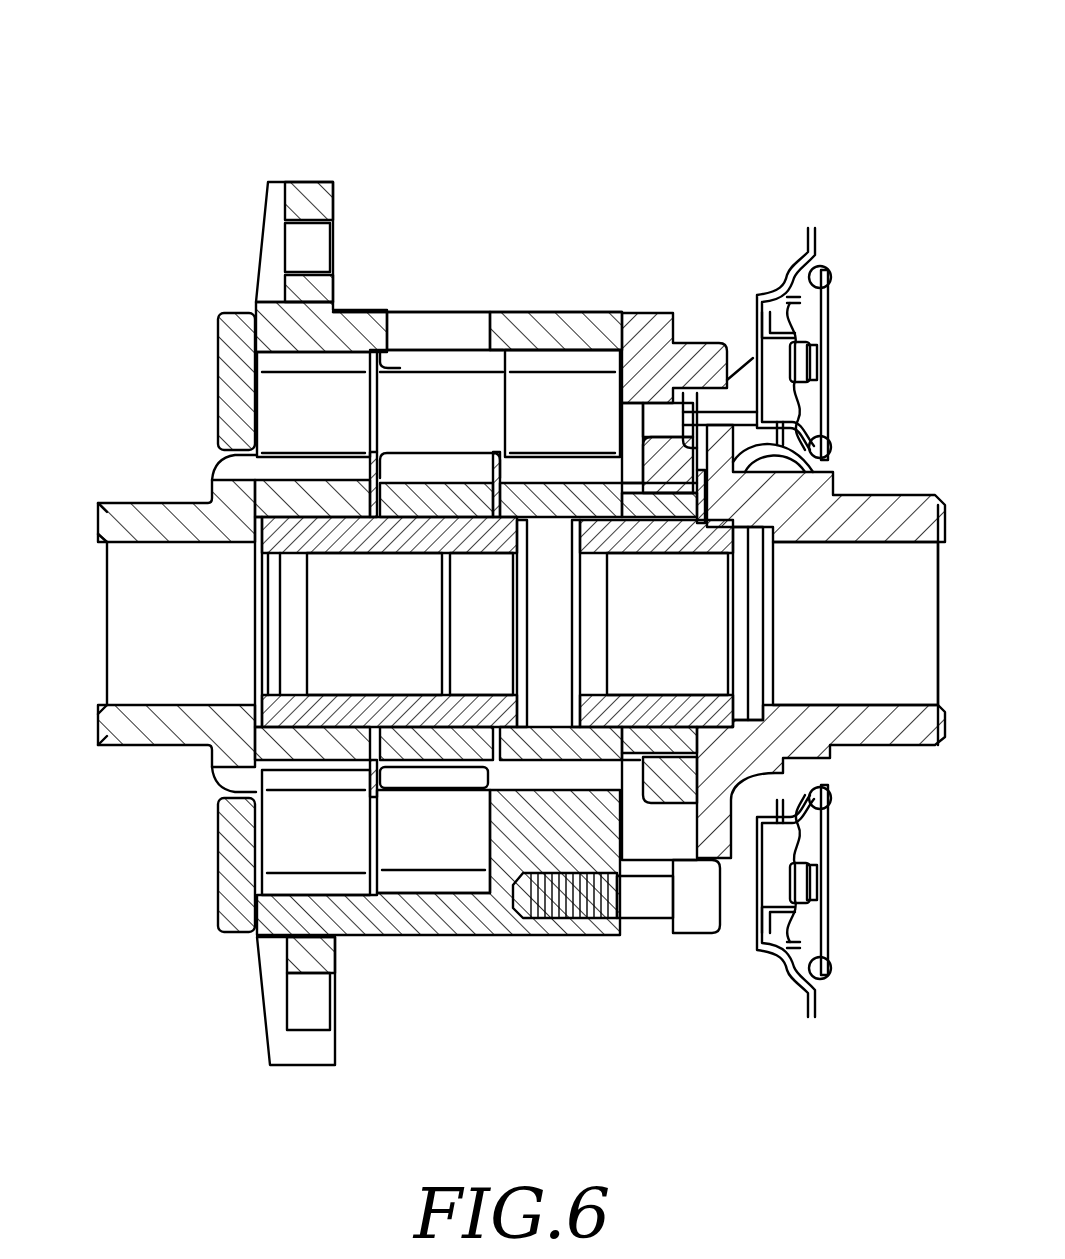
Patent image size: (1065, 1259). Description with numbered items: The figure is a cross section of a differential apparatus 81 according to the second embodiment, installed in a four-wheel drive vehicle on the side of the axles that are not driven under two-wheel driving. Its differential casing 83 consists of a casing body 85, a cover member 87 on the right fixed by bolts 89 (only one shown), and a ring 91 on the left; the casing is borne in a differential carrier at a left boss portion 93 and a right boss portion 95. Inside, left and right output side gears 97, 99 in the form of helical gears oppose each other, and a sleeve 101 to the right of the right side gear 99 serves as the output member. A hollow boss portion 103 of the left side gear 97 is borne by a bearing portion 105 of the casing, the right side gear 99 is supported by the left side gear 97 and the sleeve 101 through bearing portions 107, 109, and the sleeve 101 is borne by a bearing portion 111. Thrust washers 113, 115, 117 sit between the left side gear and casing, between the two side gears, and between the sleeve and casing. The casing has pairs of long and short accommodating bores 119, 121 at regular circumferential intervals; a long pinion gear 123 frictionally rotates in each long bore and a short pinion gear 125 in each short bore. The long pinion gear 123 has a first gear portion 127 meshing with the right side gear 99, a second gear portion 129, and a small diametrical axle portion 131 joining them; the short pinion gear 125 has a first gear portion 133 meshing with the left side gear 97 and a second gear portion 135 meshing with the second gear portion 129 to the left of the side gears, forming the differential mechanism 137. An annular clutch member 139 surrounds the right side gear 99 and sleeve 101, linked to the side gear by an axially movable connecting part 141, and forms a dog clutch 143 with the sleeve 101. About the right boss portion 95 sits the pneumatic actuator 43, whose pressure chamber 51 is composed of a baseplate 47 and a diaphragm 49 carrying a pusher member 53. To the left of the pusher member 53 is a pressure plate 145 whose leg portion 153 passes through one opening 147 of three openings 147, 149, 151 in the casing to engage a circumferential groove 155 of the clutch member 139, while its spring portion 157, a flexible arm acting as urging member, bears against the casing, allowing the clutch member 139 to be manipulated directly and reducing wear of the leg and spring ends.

The pneumatic actuator 43 is at (843, 945).
The baseplate 47 is at (828, 820).
The diaphragm 49 is at (795, 828).
The pressure chamber 51 is at (808, 923).
The pusher member 53 is at (763, 948).
The differential apparatus 81 is at (648, 160).
The differential casing 83 is at (368, 180).
The casing body 85 is at (552, 312).
The cover member 87 is at (628, 312).
The bolt 89 is at (693, 935).
The ring 91 is at (232, 313).
The left boss portion 93 is at (125, 503).
The right boss portion 95 is at (910, 495).
The left output side gear 97 is at (420, 505).
The right output side gear 99 is at (553, 772).
The sleeve 101 is at (735, 555).
The hollow boss portion 103 is at (350, 523).
The bearing portion 105 is at (325, 700).
The bearing portion 107 is at (507, 725).
The bearing portion 109 is at (625, 713).
The bearing portion 111 is at (770, 690).
The thrust washer 113 is at (410, 712).
The thrust washer 115 is at (487, 525).
The thrust washer 117 is at (688, 713).
The long accommodating bore 119 is at (390, 357).
The short accommodating bore 121 is at (378, 890).
The long pinion gear 123 is at (227, 335).
The short pinion gear 125 is at (225, 920).
The first gear portion 127 is at (572, 363).
The second gear portion 129 is at (312, 365).
The small diametrical axle portion 131 is at (465, 436).
The first gear portion 133 is at (452, 887).
The second gear portion 135 is at (308, 893).
The differential mechanism 137 is at (514, 180).
The clutch member 139 is at (655, 432).
The connecting part 141 is at (652, 500).
The dog clutch 143 is at (676, 500).
The pressure plate 145 is at (830, 200).
The opening 147 is at (727, 342).
The opening 149 is at (225, 465).
The opening 151 is at (487, 333).
The leg portion 153 is at (810, 450).
The circumferential groove 155 is at (652, 928).
The spring portion 157 is at (738, 340).